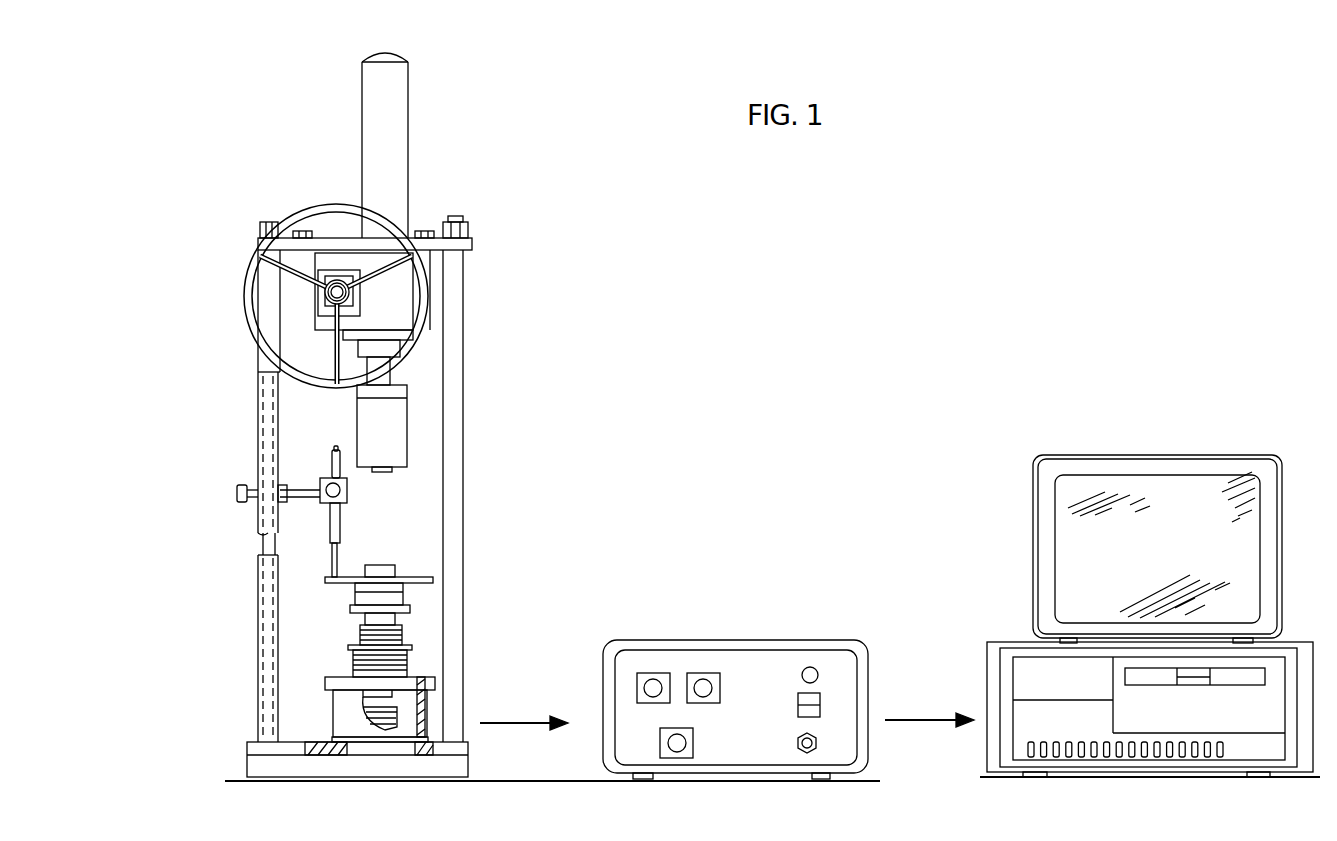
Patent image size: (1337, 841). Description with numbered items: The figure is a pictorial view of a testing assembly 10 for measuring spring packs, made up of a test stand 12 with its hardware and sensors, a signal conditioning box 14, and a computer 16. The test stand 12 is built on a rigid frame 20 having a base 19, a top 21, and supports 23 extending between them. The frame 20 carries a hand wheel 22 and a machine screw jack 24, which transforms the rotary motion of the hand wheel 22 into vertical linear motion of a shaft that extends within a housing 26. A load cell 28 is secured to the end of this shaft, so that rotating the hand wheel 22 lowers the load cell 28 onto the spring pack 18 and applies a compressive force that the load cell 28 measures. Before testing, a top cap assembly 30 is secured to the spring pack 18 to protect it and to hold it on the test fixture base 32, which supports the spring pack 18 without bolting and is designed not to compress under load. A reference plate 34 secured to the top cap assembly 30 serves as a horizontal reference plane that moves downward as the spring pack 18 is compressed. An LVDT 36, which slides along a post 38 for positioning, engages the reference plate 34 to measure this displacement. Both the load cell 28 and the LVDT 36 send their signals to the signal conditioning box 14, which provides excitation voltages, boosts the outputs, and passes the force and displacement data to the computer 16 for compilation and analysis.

The testing assembly 10 is at (547, 316).
The test stand 12 is at (465, 388).
The signal conditioning box 14 is at (737, 639).
The computer 16 is at (1130, 455).
The spring pack 18 is at (362, 632).
The base 19 is at (292, 766).
The rigid frame 20 is at (464, 538).
The top 21 is at (473, 245).
The hand wheel 22 is at (327, 205).
The supports 23 is at (259, 346).
The machine screw jack 24 is at (398, 297).
The housing 26 is at (393, 124).
The load cell 28 is at (382, 417).
The top cap assembly 30 is at (380, 565).
The test fixture base 32 is at (338, 707).
The reference plate 34 is at (325, 578).
The linear variable differential transformer (LVDT) 36 is at (338, 522).
The post 38 is at (253, 363).